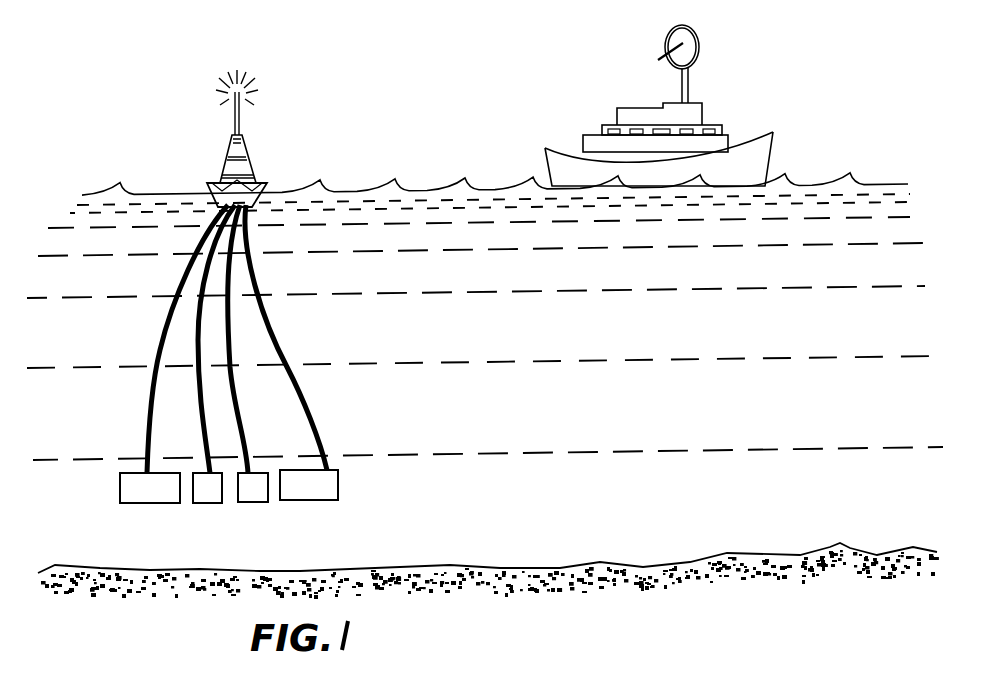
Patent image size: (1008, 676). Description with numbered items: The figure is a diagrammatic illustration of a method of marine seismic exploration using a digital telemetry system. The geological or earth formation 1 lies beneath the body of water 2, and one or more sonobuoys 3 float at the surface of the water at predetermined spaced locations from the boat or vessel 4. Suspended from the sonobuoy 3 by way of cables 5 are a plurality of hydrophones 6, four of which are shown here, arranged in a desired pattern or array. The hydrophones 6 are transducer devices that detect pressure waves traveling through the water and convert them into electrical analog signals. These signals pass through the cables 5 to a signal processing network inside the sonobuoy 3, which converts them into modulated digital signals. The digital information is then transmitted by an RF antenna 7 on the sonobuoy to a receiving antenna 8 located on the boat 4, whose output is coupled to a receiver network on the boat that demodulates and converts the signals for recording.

The geological or earth formation 1 is at (643, 567).
The body of water 2 is at (613, 368).
The sonobuoy 3 is at (222, 160).
The boat or vessel 4 is at (762, 160).
The cables 5 is at (170, 326).
The hydrophones 6 is at (128, 482).
The RF antenna 7 is at (240, 122).
The receiving antenna 8 is at (700, 42).